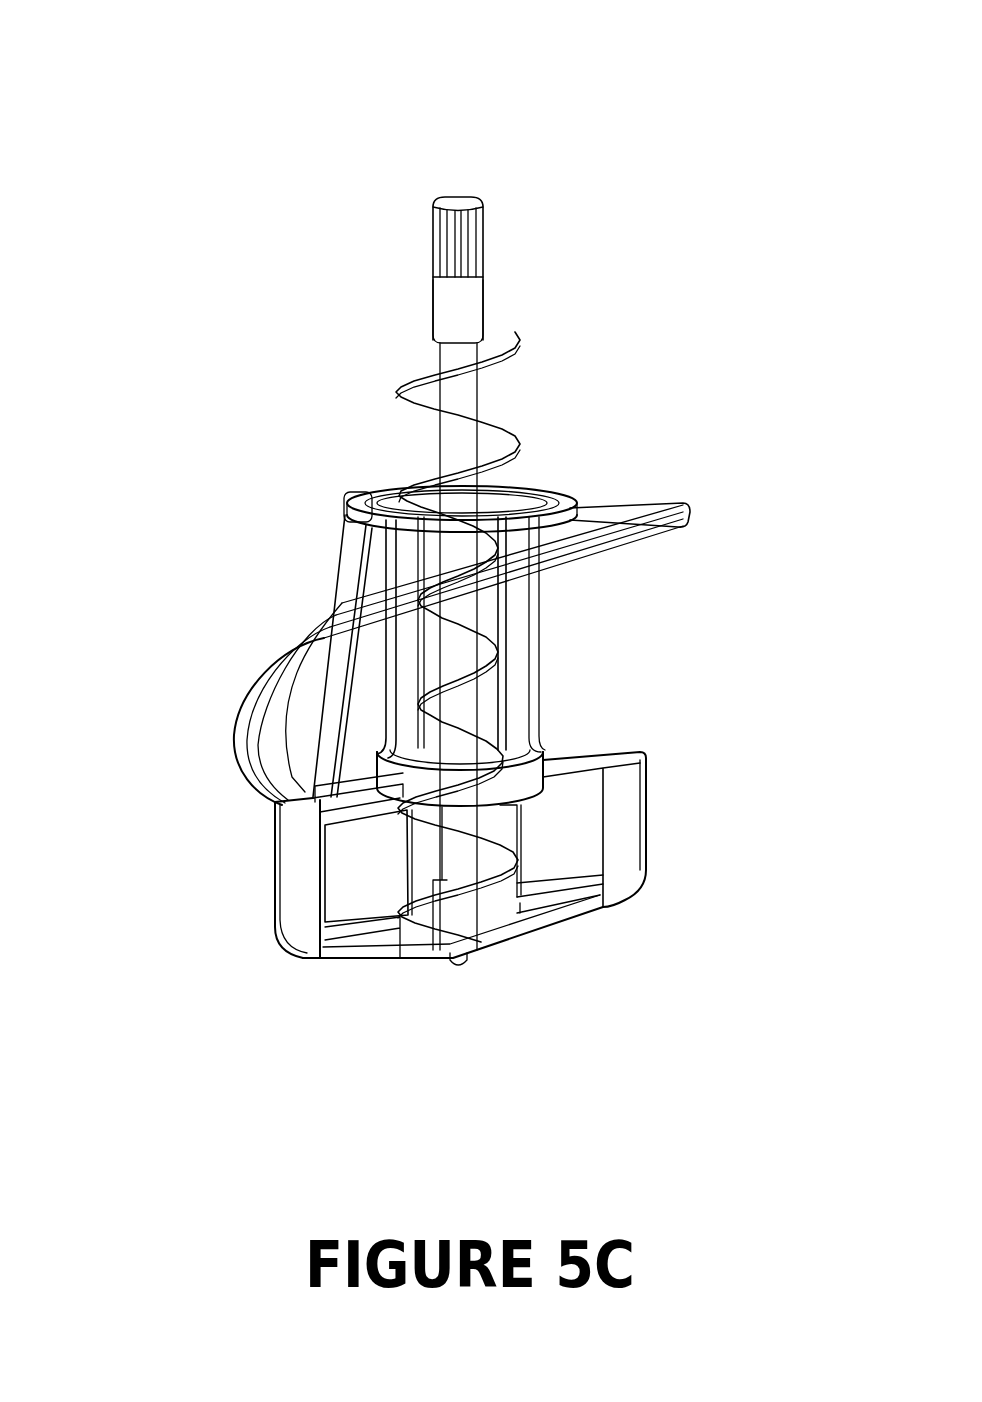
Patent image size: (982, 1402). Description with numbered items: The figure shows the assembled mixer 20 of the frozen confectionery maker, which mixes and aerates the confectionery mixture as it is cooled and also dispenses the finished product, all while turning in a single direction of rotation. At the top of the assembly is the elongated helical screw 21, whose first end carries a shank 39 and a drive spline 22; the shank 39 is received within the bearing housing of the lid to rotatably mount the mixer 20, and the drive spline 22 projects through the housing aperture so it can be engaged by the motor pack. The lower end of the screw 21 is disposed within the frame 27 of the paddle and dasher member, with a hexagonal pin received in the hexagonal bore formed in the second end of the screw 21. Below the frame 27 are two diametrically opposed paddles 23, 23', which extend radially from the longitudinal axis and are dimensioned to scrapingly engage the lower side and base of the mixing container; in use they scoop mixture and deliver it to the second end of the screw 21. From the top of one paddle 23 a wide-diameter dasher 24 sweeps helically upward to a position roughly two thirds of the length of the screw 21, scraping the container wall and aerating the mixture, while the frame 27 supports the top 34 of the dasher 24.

The mixer 20 is at (288, 207).
The drive spline 22 is at (472, 256).
The shank 39 is at (457, 306).
The helical screw 21 is at (498, 442).
The dasher 24 is at (280, 652).
The top of dasher 34 is at (683, 507).
The frame 27 is at (513, 692).
The paddle 23 is at (265, 865).
The paddle 23' is at (675, 832).